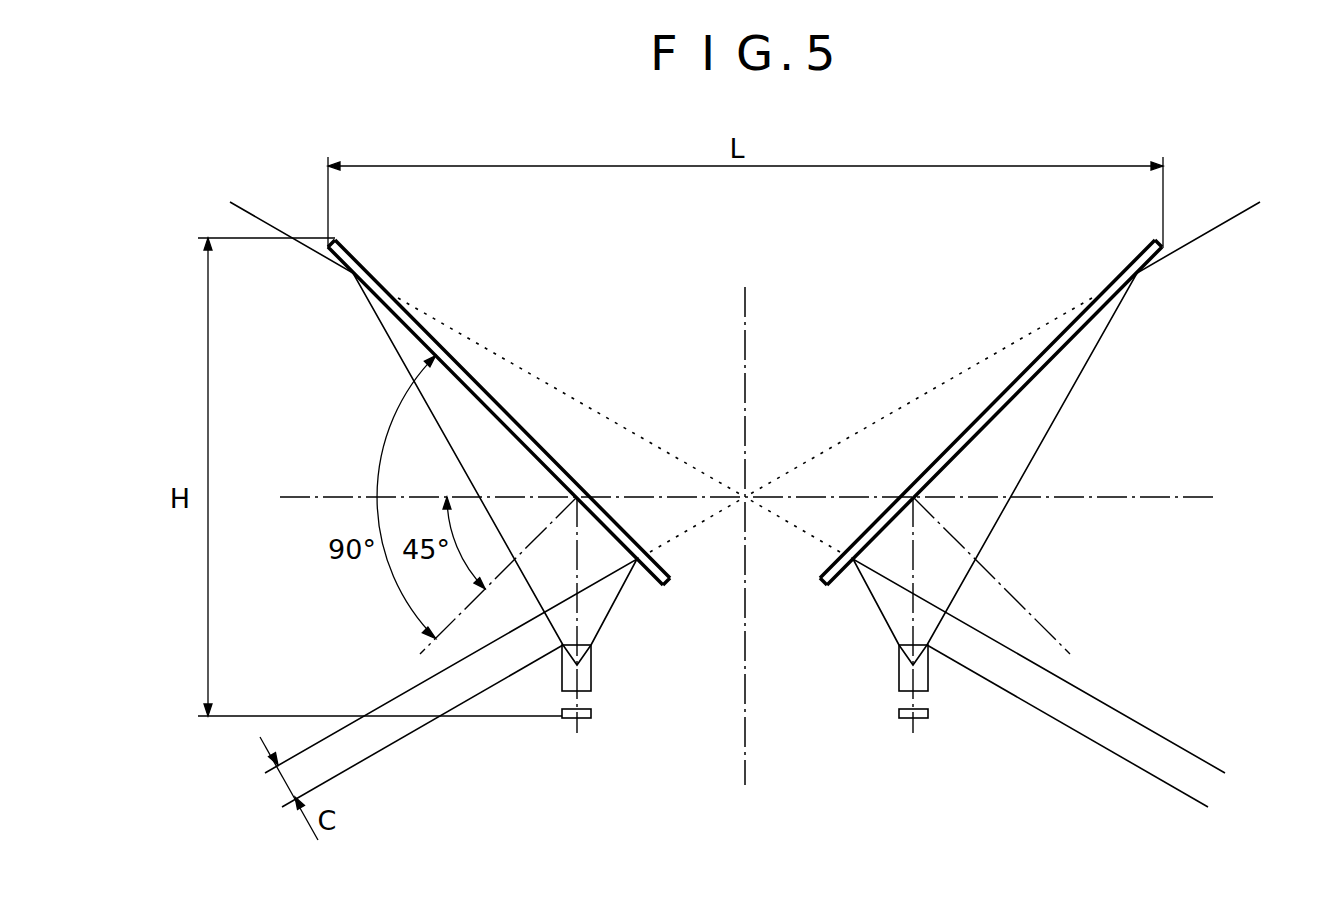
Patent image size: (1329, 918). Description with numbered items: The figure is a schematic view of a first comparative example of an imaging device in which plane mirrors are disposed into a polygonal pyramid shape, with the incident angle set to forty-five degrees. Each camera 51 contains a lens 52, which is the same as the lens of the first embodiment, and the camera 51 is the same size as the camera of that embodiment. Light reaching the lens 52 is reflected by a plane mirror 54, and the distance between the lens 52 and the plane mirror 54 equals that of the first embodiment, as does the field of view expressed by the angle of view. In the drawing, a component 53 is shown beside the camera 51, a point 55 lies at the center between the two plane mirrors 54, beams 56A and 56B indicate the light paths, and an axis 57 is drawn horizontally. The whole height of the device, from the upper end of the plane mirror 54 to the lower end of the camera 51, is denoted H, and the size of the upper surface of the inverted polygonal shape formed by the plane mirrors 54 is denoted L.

The camera 51 is at (745, 697).
The lens 52 is at (592, 672).
The lens 53 is at (745, 724).
The plane mirror 54 is at (427, 332).
The center point of optical axes 55 is at (747, 492).
The outer light beam 56A is at (260, 217).
The inner light beam 56B is at (392, 703).
The horizontal reference axis 57 is at (912, 568).